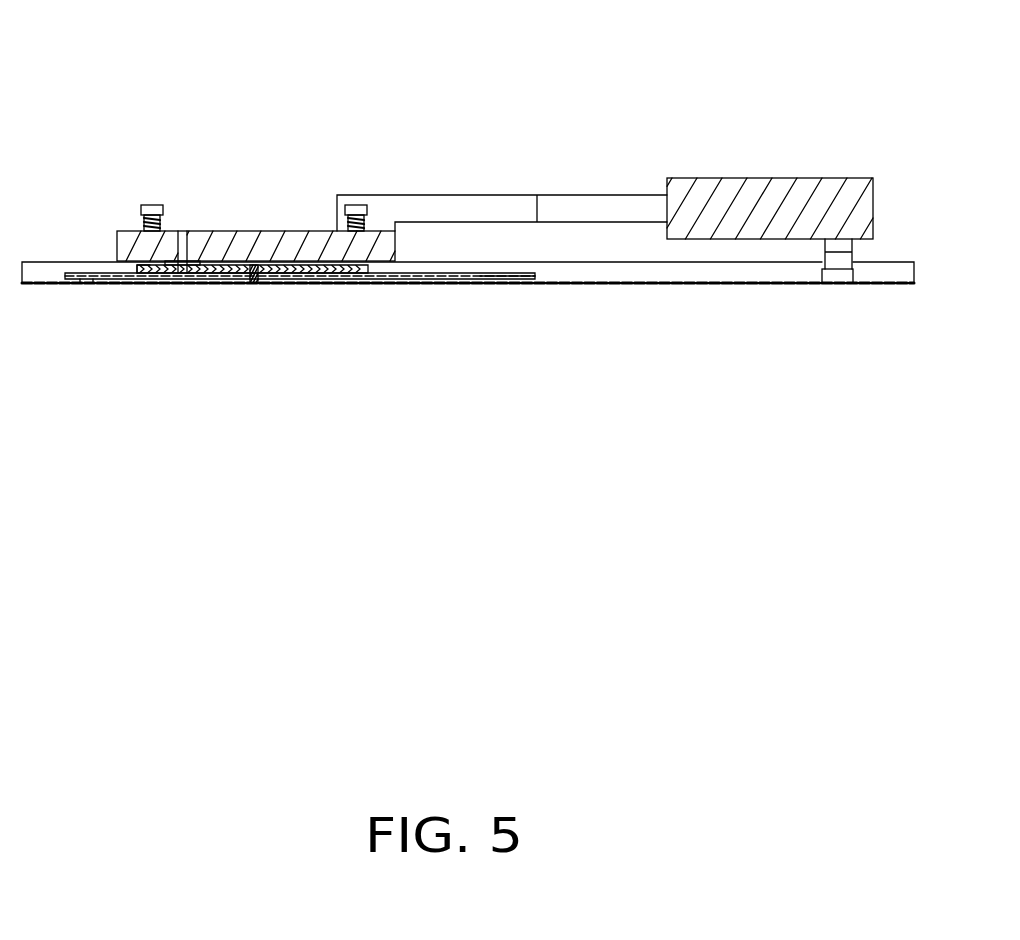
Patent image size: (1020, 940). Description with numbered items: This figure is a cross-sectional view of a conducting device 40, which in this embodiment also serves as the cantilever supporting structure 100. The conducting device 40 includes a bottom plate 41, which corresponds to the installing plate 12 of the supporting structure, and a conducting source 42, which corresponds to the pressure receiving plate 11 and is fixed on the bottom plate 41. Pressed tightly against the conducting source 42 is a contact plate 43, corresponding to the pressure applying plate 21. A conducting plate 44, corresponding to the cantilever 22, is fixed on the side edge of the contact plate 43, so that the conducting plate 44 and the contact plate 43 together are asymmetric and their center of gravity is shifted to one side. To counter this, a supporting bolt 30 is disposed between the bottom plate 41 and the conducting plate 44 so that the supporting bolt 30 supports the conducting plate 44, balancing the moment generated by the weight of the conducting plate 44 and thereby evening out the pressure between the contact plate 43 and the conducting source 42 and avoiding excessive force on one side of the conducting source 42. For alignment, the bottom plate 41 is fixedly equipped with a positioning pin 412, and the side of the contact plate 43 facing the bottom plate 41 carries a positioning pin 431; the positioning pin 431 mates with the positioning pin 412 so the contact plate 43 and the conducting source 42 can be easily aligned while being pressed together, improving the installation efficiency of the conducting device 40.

The cantilever supporting structure 100 is at (473, 187).
The conducting device 40 is at (580, 47).
The installing plate 12 is at (468, 299).
The bottom plate 41 is at (832, 278).
The positioning pin 412 is at (152, 281).
The pressure receiving plate 11 is at (252, 311).
The conducting source 42 is at (262, 284).
The pressure applying plate 21 is at (256, 205).
The contact plate 43 is at (292, 237).
The positioning pin 431 is at (184, 222).
The cantilever 22 is at (605, 180).
The conducting plate 44 is at (752, 188).
The supporting bolt 30 is at (840, 245).